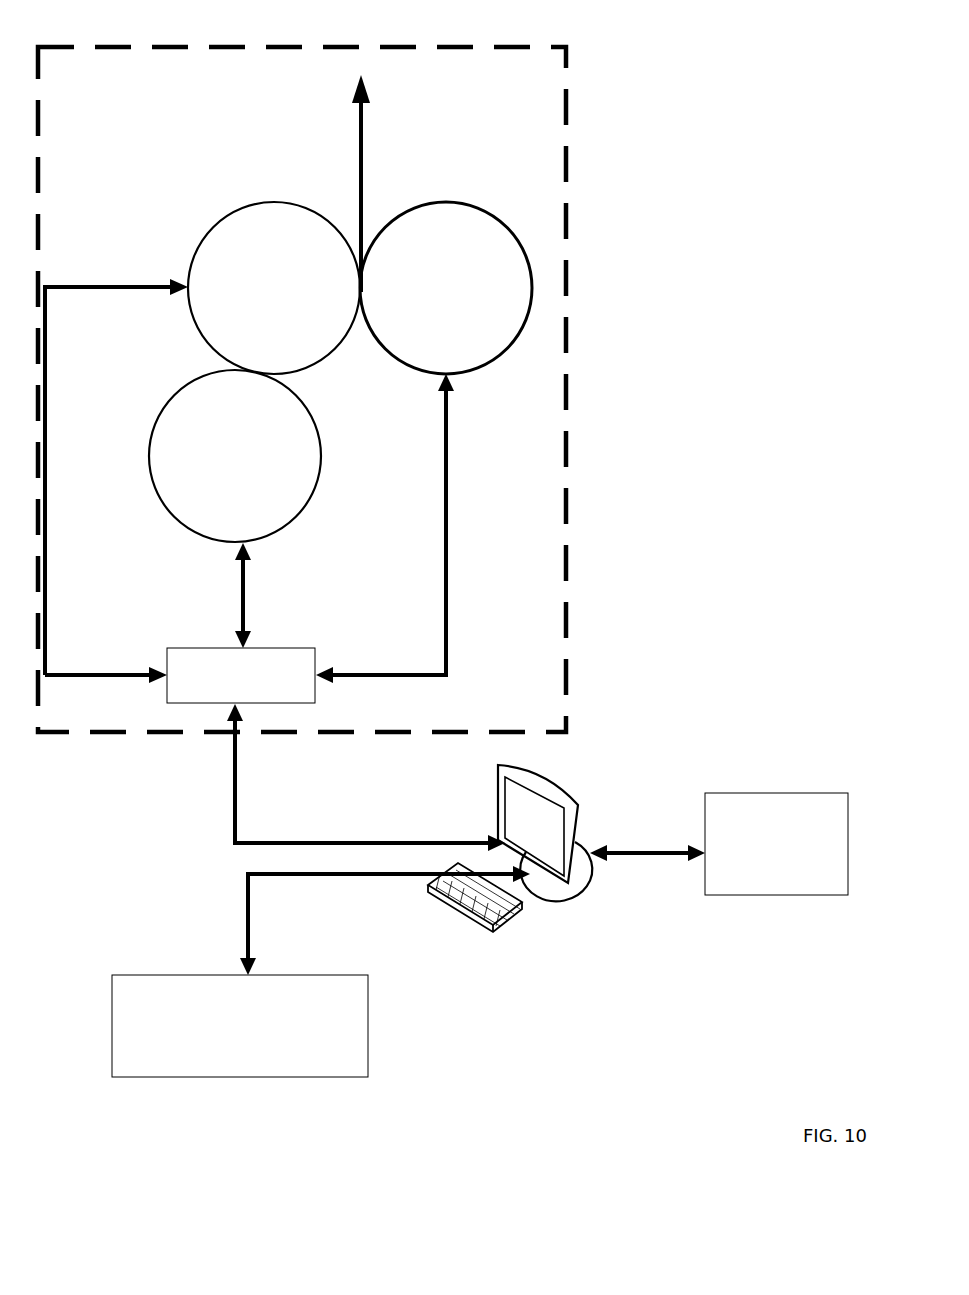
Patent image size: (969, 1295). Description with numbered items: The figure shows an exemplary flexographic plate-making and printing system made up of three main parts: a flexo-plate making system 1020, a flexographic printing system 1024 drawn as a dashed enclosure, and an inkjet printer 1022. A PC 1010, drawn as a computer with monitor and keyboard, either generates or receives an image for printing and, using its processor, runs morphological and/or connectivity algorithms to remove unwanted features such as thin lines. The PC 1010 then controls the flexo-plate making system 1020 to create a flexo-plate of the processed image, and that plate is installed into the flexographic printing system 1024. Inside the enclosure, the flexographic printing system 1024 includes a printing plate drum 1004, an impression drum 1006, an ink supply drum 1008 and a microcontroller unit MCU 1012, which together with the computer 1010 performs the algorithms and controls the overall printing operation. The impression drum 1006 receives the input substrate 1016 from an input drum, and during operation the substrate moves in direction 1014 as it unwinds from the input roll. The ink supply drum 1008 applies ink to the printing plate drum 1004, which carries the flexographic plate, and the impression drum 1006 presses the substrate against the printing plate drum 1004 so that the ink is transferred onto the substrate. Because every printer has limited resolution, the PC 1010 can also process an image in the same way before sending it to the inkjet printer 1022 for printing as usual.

The printing plate drum 1004 is at (274, 288).
The impression drum 1006 is at (446, 288).
The ink supply drum 1008 is at (235, 456).
The PC (computer) 1010 is at (510, 846).
The microcontroller unit (MCU) 1012 is at (241, 675).
The substrate movement direction 1014 is at (362, 77).
The input substrate 1016 is at (387, 196).
The flexo-plate making system 1020 is at (240, 1026).
The inkjet printer 1022 is at (776, 844).
The flexographic printing system 1024 is at (302, 377).